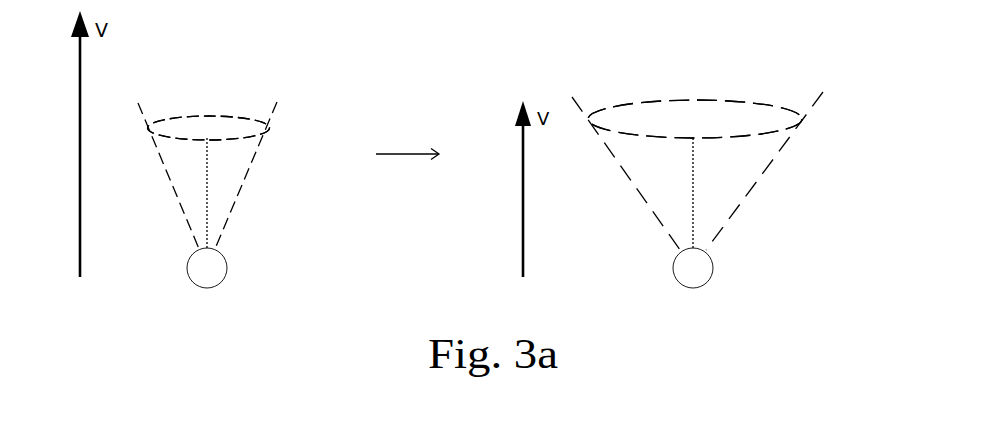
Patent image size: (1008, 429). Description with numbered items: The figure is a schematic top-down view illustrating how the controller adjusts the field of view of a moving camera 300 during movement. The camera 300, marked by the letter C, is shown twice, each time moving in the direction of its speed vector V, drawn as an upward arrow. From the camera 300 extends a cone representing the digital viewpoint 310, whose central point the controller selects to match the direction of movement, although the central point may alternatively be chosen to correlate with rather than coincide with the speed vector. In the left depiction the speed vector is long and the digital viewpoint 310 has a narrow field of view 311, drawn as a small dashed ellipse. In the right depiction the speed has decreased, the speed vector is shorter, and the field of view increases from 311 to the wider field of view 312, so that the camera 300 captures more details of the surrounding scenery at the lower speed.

The camera 300 is at (228, 266).
The digital viewpoint 310 is at (227, 204).
The field of view 311 is at (207, 90).
The field of view 312 is at (687, 85).